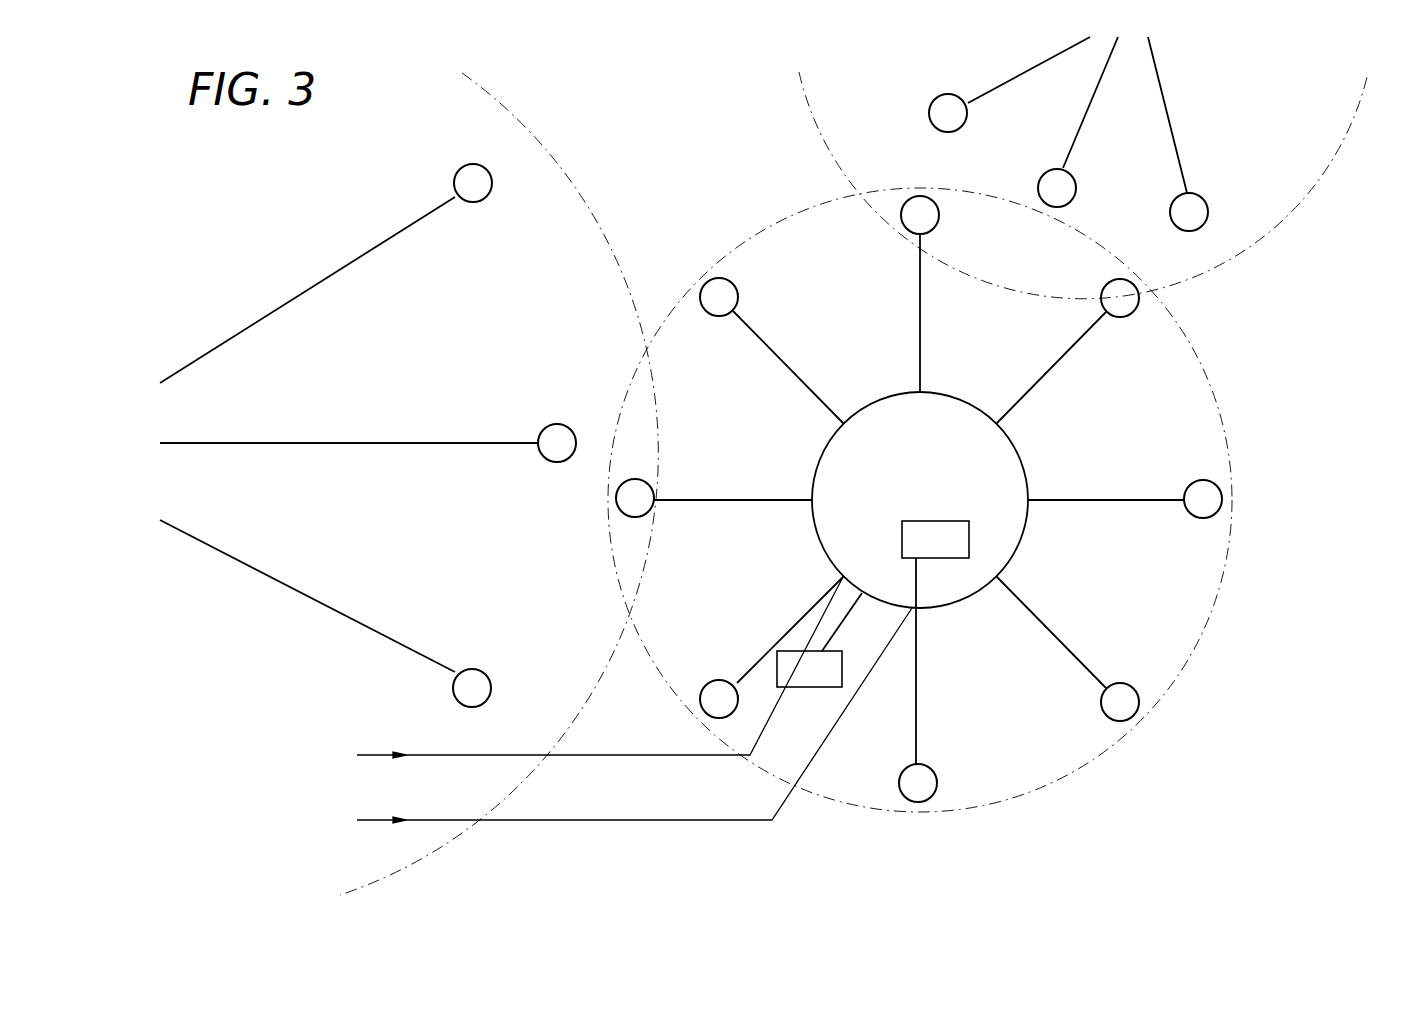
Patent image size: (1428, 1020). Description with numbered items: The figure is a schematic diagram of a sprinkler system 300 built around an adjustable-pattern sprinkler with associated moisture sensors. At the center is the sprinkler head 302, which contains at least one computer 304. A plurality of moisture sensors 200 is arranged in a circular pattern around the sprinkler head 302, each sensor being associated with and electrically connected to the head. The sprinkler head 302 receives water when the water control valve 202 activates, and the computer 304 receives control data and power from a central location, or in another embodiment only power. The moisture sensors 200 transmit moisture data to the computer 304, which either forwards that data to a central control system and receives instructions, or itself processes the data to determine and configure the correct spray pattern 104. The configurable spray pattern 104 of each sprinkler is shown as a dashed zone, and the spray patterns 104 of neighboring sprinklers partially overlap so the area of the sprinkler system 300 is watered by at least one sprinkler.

The configurable spray pattern 104 is at (574, 183).
The moisture sensor 200 is at (459, 167).
The water control valve 202 is at (810, 688).
The sprinkler system 300 is at (722, 138).
The sprinkler head 302 is at (1019, 450).
The computer 304 is at (933, 520).